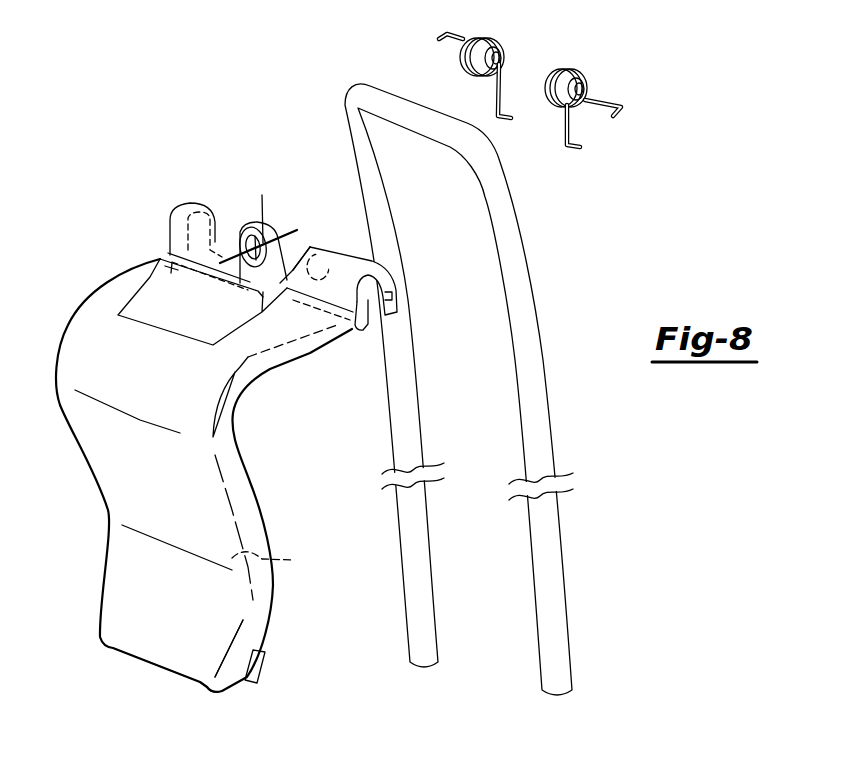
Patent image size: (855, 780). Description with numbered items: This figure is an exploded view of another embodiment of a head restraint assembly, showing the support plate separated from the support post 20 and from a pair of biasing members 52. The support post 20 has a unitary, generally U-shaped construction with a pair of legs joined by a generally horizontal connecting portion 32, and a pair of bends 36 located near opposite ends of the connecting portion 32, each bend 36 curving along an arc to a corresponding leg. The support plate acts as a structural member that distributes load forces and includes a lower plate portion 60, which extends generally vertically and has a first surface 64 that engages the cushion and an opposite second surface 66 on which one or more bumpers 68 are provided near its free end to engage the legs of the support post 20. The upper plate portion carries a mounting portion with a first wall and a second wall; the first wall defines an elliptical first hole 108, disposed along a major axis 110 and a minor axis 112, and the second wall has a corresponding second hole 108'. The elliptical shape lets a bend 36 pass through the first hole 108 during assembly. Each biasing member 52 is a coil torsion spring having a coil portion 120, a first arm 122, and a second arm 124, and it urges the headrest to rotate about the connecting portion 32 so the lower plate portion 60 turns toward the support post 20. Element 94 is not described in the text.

The support post 20 is at (543, 270).
The connecting portion 32 is at (415, 108).
The bends 36 is at (346, 92).
The biasing member 52 is at (491, 58).
The lower plate portion 60 is at (259, 610).
The first surface 64 is at (163, 645).
The second surface 66 is at (274, 560).
The bumpers 68 is at (266, 670).
The upper portion 94 is at (362, 11).
The first hole 108 is at (350, 242).
The second hole 108' is at (274, 237).
The major axis 110 is at (248, 243).
The minor axis 112 is at (233, 285).
The coil portion 120 is at (571, 73).
The first arm 122 is at (461, 36).
The second arm 124 is at (568, 125).